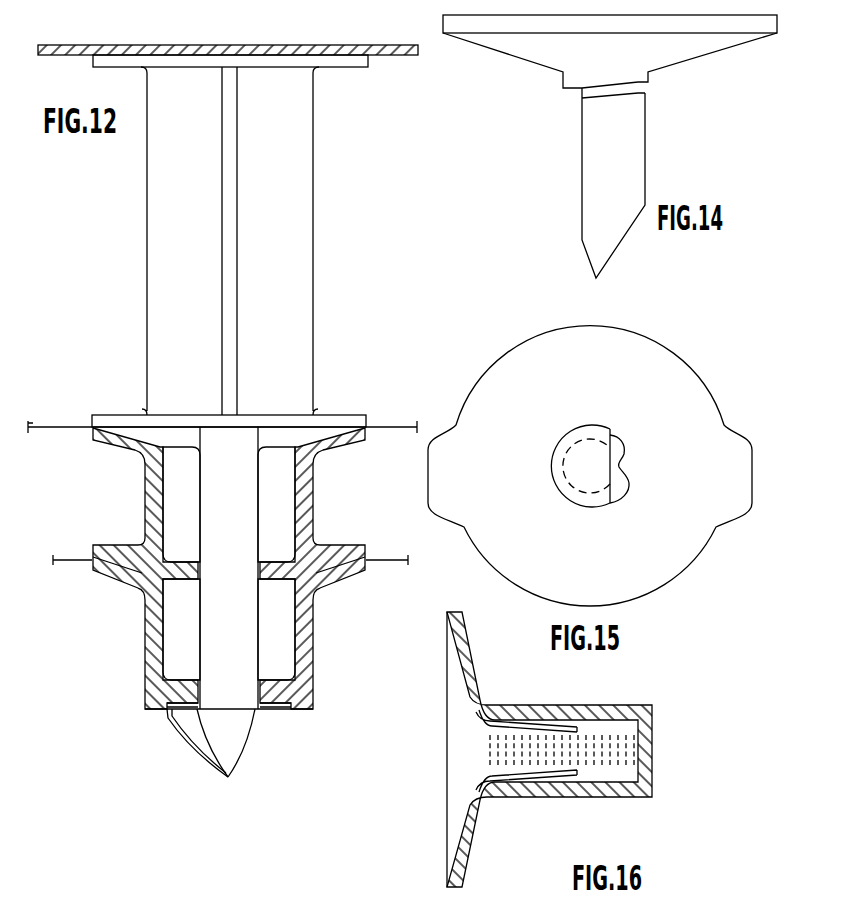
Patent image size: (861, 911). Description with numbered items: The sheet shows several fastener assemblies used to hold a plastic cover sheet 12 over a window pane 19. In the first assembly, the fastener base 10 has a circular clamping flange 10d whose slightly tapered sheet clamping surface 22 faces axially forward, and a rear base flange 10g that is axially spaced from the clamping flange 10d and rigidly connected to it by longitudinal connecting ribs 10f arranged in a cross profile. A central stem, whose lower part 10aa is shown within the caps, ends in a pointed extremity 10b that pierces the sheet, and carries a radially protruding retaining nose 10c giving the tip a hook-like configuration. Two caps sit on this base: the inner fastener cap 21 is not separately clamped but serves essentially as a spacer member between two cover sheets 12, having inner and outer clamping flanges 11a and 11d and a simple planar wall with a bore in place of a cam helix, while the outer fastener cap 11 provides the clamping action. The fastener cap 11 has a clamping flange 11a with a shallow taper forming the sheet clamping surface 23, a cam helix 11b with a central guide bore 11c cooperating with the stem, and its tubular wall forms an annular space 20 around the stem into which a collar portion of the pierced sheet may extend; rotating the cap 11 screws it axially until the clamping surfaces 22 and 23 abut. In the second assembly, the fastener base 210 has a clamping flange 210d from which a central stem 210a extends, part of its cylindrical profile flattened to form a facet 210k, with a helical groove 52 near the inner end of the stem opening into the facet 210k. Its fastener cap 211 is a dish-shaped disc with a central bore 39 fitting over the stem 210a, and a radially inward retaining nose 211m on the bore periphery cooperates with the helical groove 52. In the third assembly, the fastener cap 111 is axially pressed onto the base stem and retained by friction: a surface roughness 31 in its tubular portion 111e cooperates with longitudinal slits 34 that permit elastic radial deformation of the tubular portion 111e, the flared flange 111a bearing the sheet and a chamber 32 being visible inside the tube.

In FIG. 12, the fastener base 10 is at (146, 190).
In FIG. 12, the base flange 10g is at (187, 59).
In FIG. 12, the window pane 19 is at (305, 54).
In FIG. 12, the clamping flange 10d is at (183, 422).
In FIG. 12, the sheet clamping surface 22 is at (200, 436).
In FIG. 12, the connecting ribs 10f is at (233, 375).
In FIG. 12, the sheet clamping surface 23 is at (336, 451).
In FIG. 16, the sheet clamping surface 23 is at (451, 668).
In FIG. 12, the annular space 20 is at (277, 488).
In FIG. 12, the inner fastener cap 21 is at (316, 513).
In FIG. 12, the cover sheet 12 is at (55, 558).
In FIG. 12, the clamping flange 11a is at (128, 447).
In FIG. 12, the outer clamping flange 11d is at (110, 556).
In FIG. 12, the fastener cap 11 is at (317, 642).
In FIG. 12, the stem lower part 10aa is at (215, 634).
In FIG. 12, the central guide bore 11c is at (190, 702).
In FIG. 12, the retaining nose 10c is at (203, 729).
In FIG. 12, the cam helix 11b is at (283, 705).
In FIG. 12, the pointed extremity 10b is at (224, 737).
In FIG. 14, the clamping flange 210d is at (535, 48).
In FIG. 14, the helical groove 52 is at (612, 92).
In FIG. 15, the helical groove 52 is at (578, 490).
In FIG. 14, the facet 210k is at (578, 152).
In FIG. 15, the facet 210k is at (616, 433).
In FIG. 14, the central stem 210a is at (597, 195).
In FIG. 15, the central stem 210a is at (588, 484).
In FIG. 14, the fastener base 210 is at (667, 141).
In FIG. 15, the fastener cap 211 is at (665, 553).
In FIG. 15, the retaining nose 211m is at (622, 466).
In FIG. 15, the central bore 39 is at (621, 438).
In FIG. 16, the fastener cap 111 is at (510, 690).
In FIG. 16, the tubular portion 111e is at (592, 780).
In FIG. 16, the longitudinal slits 34 is at (525, 773).
In FIG. 16, the surface roughness 31 is at (555, 757).
In FIG. 16, the chamber 32 is at (622, 775).
In FIG. 16, the funnel flange 111a is at (467, 858).